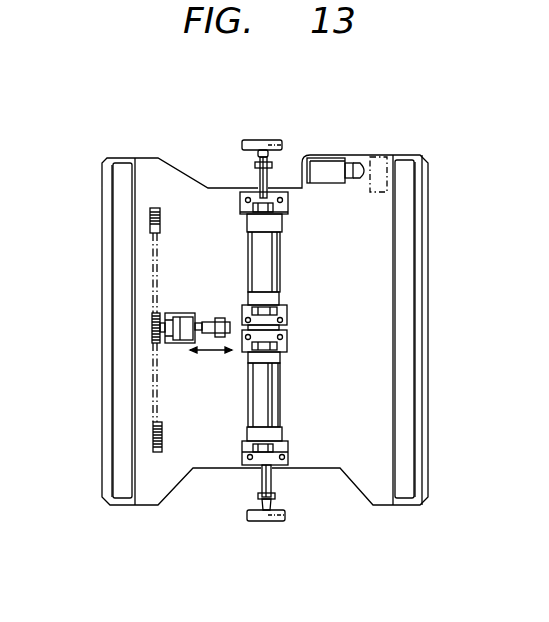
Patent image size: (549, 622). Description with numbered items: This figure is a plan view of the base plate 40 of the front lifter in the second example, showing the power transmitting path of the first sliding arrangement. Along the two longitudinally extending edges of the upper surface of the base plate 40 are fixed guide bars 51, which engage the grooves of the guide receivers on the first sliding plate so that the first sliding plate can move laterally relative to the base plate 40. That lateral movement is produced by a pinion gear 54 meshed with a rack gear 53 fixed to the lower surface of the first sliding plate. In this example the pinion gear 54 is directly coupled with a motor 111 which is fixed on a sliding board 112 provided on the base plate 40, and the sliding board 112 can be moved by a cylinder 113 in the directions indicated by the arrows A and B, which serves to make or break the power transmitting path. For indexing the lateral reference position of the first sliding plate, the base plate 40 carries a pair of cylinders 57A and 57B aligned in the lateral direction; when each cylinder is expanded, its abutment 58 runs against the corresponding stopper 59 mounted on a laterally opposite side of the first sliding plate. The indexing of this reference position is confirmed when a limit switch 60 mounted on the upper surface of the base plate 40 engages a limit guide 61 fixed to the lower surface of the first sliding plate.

The base plate 40 is at (146, 155).
The guide bar 51 is at (118, 205).
The rack gear 53 is at (153, 412).
The pinion gear 54 is at (152, 326).
The cylinder 57A is at (276, 268).
The cylinder 57B is at (270, 400).
The abutment 58 is at (256, 157).
The stopper 59 is at (268, 140).
The limit switch 60 is at (333, 177).
The limit guide 61 is at (372, 157).
The motor 111 is at (190, 313).
The sliding board 112 is at (170, 313).
The cylinder 113 is at (225, 318).